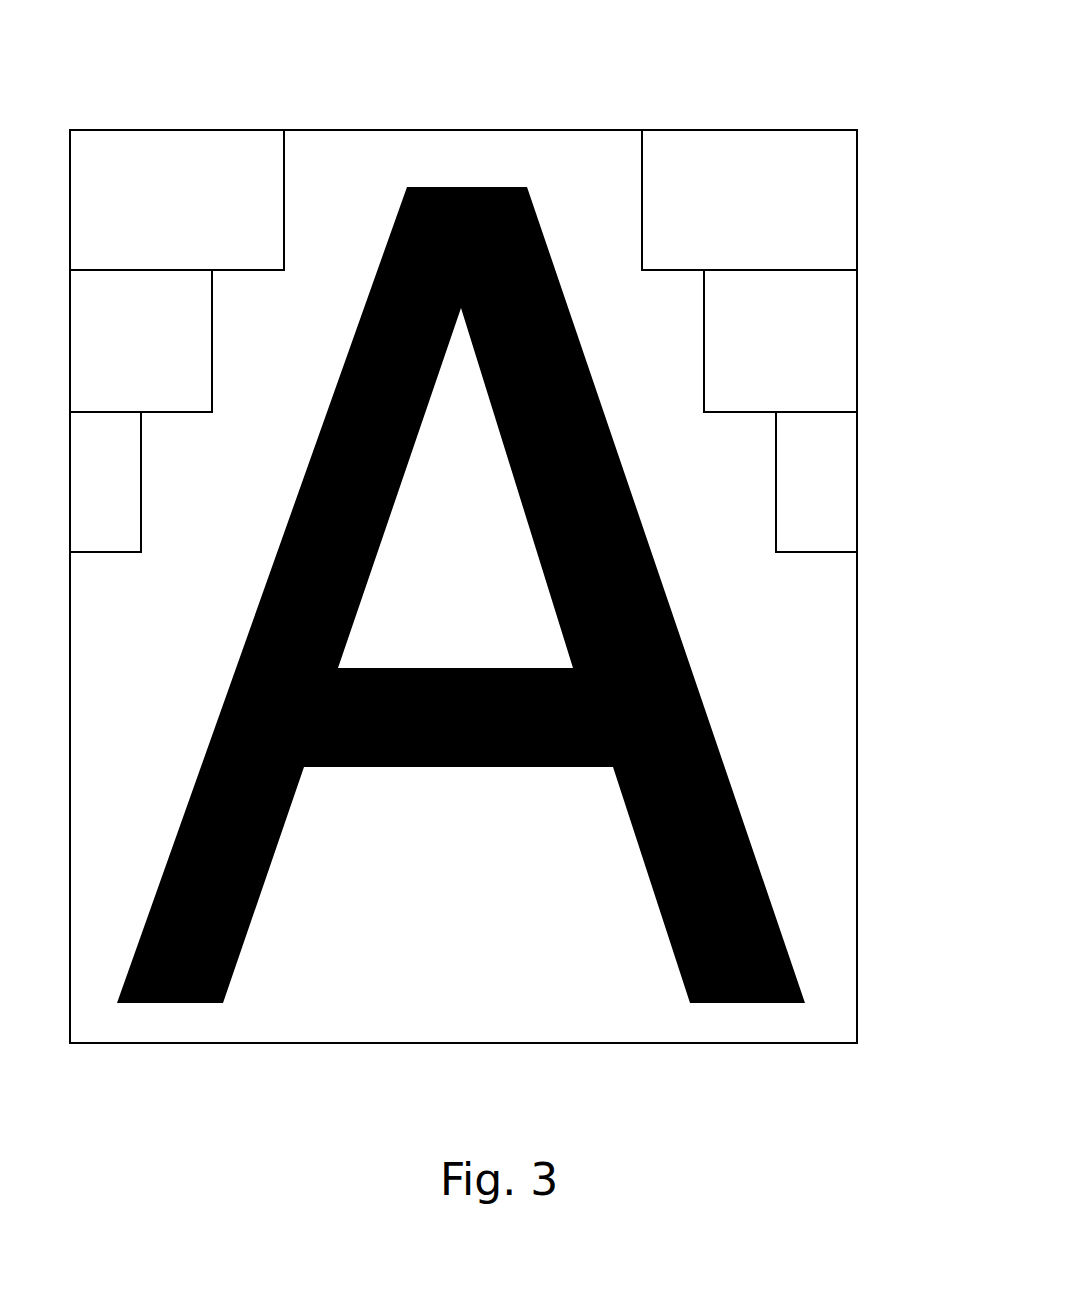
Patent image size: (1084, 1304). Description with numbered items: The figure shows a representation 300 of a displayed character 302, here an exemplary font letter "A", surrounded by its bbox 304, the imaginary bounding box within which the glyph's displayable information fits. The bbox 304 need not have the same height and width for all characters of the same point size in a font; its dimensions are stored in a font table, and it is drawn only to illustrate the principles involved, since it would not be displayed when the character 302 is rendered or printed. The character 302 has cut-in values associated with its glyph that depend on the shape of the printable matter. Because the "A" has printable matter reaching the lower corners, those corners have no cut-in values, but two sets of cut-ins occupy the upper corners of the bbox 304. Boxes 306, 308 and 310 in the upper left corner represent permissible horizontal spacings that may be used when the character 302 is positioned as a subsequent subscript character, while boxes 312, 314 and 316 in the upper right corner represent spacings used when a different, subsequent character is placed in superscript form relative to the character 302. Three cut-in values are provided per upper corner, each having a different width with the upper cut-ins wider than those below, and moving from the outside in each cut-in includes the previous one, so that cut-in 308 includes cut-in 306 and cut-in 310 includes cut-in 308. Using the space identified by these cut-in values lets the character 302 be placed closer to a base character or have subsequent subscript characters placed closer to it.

The representation 300 is at (750, 96).
The character 302 is at (245, 945).
The bbox 304 is at (532, 1042).
The box 306 is at (284, 200).
The box 308 is at (212, 342).
The box 310 is at (141, 482).
The box 312 is at (857, 235).
The box 314 is at (857, 376).
The box 316 is at (857, 515).